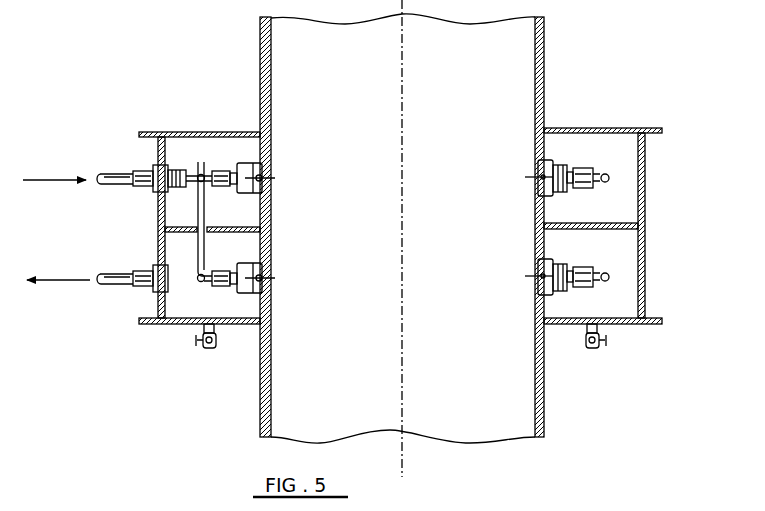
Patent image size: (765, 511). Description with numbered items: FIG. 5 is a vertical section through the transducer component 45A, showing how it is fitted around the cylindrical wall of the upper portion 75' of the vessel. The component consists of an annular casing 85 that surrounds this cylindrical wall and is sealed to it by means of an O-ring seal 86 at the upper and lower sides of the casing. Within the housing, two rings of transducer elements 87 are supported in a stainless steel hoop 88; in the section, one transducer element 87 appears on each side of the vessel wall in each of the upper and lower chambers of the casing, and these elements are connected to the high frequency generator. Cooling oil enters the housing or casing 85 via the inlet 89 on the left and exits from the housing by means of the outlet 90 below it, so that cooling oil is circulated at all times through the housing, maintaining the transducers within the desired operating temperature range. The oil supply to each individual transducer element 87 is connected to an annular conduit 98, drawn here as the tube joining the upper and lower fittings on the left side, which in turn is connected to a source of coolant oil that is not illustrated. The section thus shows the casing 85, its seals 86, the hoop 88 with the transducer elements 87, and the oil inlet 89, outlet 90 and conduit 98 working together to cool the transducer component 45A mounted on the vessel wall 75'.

The upper portion of the vessel 75' is at (402, 238).
The O-ring seal 86 is at (271, 122).
The annular casing 85 is at (627, 128).
The transducer component 45A is at (567, 151).
The stainless steel hoop 88 is at (565, 193).
The transducer elements 87 is at (548, 259).
The inlet 89 is at (130, 178).
The outlet 90 is at (130, 276).
The annular conduit 98 is at (204, 264).